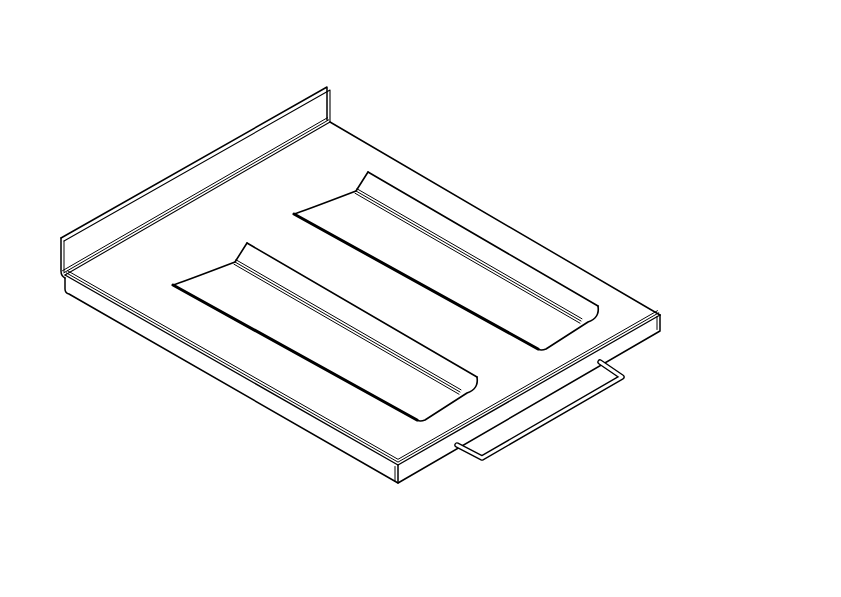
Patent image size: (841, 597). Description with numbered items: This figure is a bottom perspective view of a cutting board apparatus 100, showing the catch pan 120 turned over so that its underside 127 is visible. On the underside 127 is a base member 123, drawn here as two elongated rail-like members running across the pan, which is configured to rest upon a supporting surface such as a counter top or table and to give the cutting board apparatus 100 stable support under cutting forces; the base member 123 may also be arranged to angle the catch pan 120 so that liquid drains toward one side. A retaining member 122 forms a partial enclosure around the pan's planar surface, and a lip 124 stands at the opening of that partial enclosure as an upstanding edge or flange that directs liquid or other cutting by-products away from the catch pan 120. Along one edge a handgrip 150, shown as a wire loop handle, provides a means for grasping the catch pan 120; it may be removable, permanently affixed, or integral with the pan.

The cutting board apparatus 100 is at (177, 103).
The catch pan 120 is at (527, 188).
The retaining member 122 is at (325, 433).
The base member 123 is at (238, 290).
The lip 124 is at (138, 193).
The underside 127 is at (317, 185).
The handgrip 150 is at (575, 405).